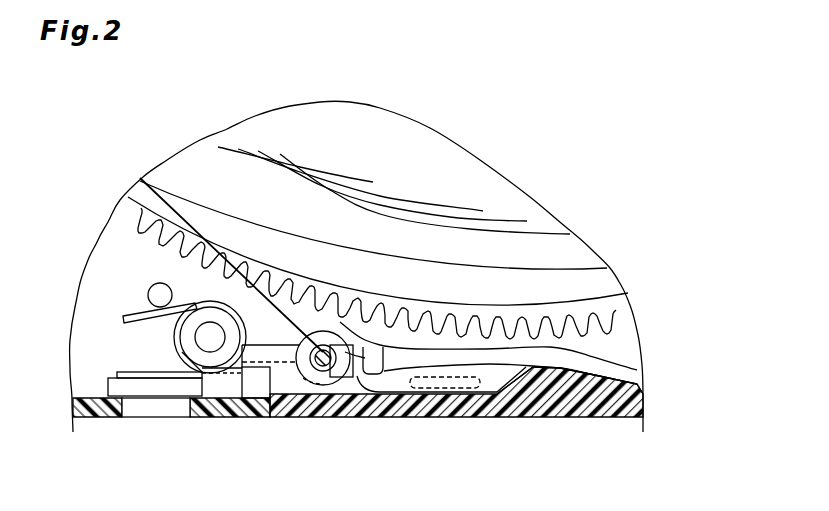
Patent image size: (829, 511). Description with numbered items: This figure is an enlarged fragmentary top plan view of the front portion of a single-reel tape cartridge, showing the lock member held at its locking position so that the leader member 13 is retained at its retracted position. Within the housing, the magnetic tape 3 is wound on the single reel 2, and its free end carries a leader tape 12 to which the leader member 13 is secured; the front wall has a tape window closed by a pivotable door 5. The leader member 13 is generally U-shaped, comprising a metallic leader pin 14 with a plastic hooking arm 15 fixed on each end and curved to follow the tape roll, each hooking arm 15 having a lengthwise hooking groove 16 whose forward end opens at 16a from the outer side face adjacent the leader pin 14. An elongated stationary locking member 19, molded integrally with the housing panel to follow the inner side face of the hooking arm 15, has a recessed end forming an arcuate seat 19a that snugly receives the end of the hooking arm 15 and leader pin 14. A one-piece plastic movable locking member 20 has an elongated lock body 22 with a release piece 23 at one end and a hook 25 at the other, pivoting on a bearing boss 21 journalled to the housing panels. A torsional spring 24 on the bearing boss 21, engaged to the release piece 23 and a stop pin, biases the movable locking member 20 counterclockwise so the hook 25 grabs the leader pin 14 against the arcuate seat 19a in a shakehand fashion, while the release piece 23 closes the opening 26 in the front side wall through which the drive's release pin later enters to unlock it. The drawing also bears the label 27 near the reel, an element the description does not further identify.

The single reel 2 is at (608, 276).
The magnetic tape 3 is at (230, 137).
The pivotable door 5 is at (607, 407).
The leader tape 12 is at (154, 184).
The leader member 13 is at (472, 395).
The leader pin 14 is at (317, 390).
The hooking arm 15 is at (362, 378).
The hooking groove 16 is at (443, 390).
The forward opening of hooking groove 16a is at (380, 395).
The stationary locking member 19 is at (578, 362).
The arcuate seat 19a is at (400, 348).
The movable locking member 20 is at (260, 380).
The bearing boss 21 is at (207, 313).
The lock body 22 is at (260, 347).
The release piece 23 is at (107, 383).
The torsional spring 24 is at (153, 371).
The hook 25 is at (325, 345).
The opening 26 is at (167, 410).
The gear ring 27 is at (500, 362).